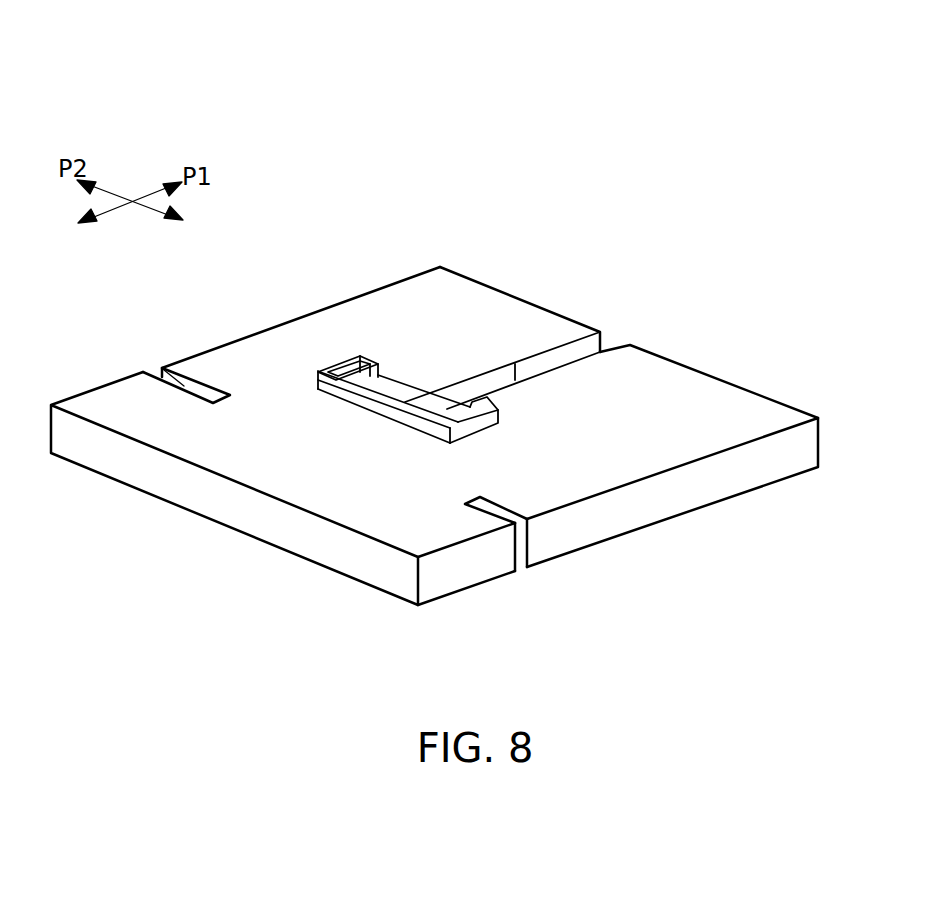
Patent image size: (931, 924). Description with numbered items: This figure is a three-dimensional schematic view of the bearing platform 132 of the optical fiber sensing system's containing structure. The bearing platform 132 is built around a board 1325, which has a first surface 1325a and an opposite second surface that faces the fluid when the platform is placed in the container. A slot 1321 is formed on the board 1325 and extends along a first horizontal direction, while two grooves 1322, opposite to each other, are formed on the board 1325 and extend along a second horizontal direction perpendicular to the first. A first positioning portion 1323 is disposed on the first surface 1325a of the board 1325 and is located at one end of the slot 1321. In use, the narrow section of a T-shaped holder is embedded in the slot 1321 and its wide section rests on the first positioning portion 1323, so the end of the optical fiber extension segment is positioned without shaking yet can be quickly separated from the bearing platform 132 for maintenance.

The bearing platform 132 is at (256, 35).
The slot 1321 is at (522, 376).
The grooves 1322 is at (162, 367).
The first positioning portion 1323 is at (320, 368).
The board 1325 is at (428, 290).
The first surface 1325a is at (340, 310).